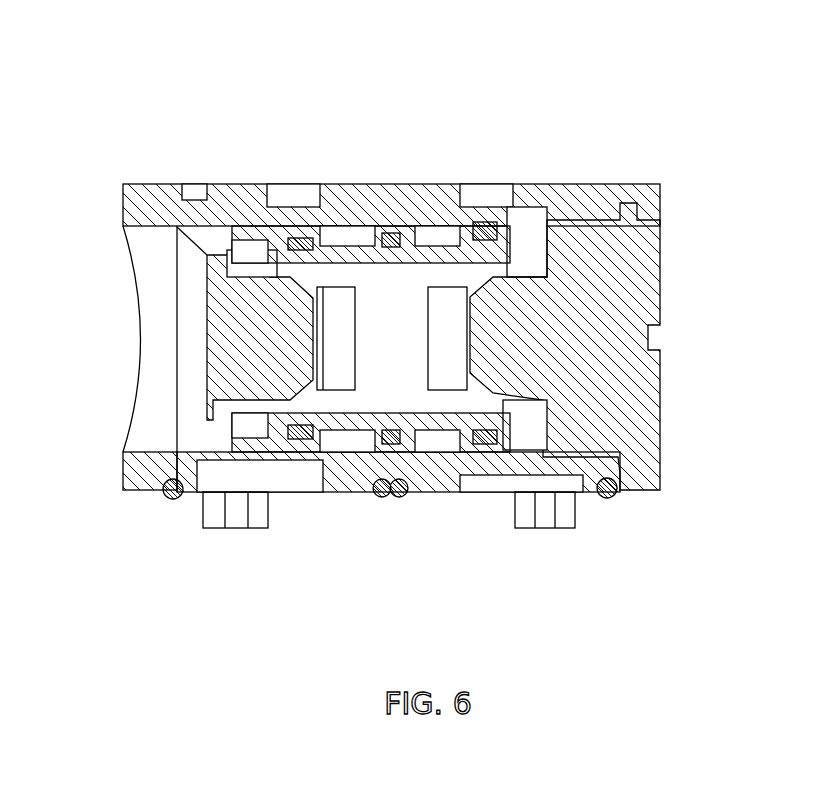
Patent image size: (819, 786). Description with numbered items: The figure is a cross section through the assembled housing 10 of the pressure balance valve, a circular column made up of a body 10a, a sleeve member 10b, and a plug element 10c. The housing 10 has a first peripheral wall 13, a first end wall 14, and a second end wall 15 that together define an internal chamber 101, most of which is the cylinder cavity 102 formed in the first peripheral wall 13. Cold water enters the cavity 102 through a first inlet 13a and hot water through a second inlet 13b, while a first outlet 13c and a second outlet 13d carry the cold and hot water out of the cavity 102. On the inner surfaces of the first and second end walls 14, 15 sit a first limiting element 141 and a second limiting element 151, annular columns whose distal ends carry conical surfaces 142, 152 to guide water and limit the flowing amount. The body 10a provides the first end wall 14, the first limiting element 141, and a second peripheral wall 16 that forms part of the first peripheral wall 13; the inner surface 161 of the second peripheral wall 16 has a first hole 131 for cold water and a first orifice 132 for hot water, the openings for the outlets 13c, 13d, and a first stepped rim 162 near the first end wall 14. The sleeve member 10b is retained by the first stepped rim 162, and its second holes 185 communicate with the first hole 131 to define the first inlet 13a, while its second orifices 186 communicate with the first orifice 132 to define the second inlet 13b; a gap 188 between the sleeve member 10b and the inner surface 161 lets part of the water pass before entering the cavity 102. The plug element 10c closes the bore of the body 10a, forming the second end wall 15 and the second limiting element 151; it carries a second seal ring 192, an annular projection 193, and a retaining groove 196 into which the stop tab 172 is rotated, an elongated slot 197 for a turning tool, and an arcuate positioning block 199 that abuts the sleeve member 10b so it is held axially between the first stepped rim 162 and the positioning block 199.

The housing 10 is at (588, 158).
The body 10a is at (145, 182).
The sleeve member 10b is at (396, 207).
The plug element 10c is at (660, 265).
The first peripheral wall 13 is at (436, 40).
The first inlet 13a is at (368, 584).
The second inlet 13b is at (505, 577).
The first outlet 13c is at (258, 235).
The second outlet 13d is at (528, 210).
The first end wall 14 is at (215, 318).
The second end wall 15 is at (620, 297).
The second peripheral wall 16 is at (395, 205).
The internal chamber 101 is at (527, 440).
The cylinder cavity 102 is at (377, 343).
The first hole 131 is at (342, 298).
The first orifice 132 is at (447, 303).
The first limiting element 141 is at (255, 232).
The conical surface 142 is at (290, 235).
The second limiting element 151 is at (542, 215).
The conical surface 152 is at (503, 232).
The inner surface 161 is at (527, 417).
The first stepped rim 162 is at (300, 428).
The stop tab 172 is at (668, 207).
The second holes 185 is at (320, 452).
The second orifices 186 is at (452, 417).
The gap 188 is at (382, 238).
The second seal ring 192 is at (583, 197).
The annular projection 193 is at (642, 475).
The retaining groove 196 is at (663, 220).
The elongated slot 197 is at (633, 337).
The positioning block 199 is at (527, 440).